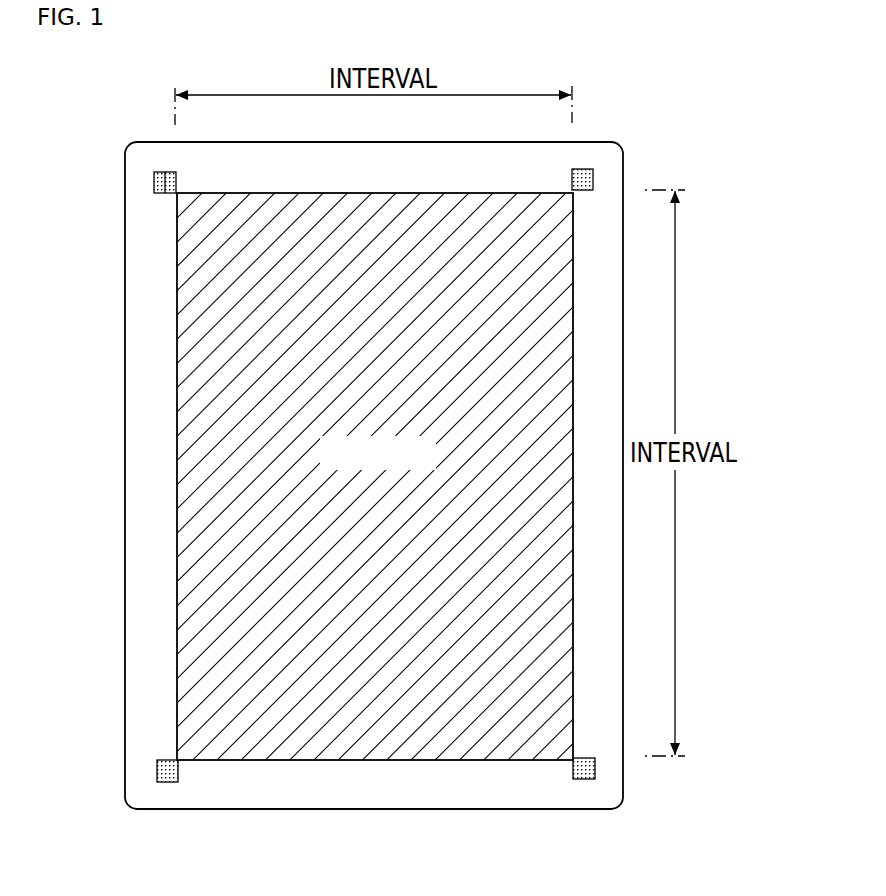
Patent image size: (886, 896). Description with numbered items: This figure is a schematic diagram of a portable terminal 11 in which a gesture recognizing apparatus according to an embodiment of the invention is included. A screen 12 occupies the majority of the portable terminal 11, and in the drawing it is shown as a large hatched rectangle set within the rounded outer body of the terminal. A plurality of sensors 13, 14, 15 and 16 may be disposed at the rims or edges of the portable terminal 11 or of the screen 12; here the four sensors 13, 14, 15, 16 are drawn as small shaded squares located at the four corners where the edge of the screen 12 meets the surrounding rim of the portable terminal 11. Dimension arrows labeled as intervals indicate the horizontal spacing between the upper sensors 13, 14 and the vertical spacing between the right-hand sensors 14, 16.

The portable terminal 11 is at (125, 425).
The screen 12 is at (176, 545).
The sensor 13 is at (160, 172).
The sensor 14 is at (586, 169).
The sensor 15 is at (168, 782).
The sensor 16 is at (583, 779).